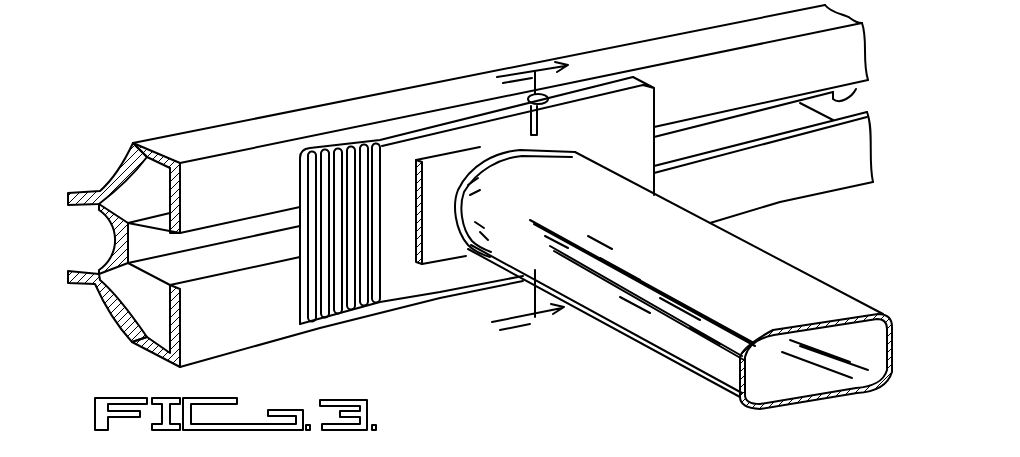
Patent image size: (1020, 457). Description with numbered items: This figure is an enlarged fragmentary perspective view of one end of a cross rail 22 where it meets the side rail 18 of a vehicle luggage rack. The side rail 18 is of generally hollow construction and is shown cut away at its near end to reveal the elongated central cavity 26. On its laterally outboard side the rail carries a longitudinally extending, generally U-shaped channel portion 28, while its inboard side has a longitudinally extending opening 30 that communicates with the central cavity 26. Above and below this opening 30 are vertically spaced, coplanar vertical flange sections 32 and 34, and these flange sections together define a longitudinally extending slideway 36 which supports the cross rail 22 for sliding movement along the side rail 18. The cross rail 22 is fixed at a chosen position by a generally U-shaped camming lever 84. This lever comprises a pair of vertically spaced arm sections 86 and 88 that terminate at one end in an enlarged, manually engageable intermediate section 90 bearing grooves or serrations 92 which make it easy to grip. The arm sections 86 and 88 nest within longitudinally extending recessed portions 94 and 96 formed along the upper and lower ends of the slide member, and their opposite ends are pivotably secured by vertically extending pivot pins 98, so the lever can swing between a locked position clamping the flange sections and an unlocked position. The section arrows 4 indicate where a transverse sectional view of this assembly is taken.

The side rail 18 is at (255, 106).
The cross rail 22 is at (676, 372).
The central cavity 26 is at (140, 300).
The U-shaped channel portion 28 is at (82, 220).
The longitudinally extending opening 30 is at (300, 227).
The vertical flange section 32 is at (207, 184).
The vertical flange section 34 is at (213, 323).
The slideway 36 is at (860, 86).
The section line 4- 4 is at (530, 202).
The camming lever 84 is at (394, 127).
The arm section 86 is at (454, 138).
The arm section 88 is at (460, 271).
The intermediate section 90 is at (393, 270).
The grooves or serrations 92 is at (318, 327).
The recessed portion 94 is at (476, 140).
The recessed portion 96 is at (477, 254).
The pivot pin 98 is at (533, 120).